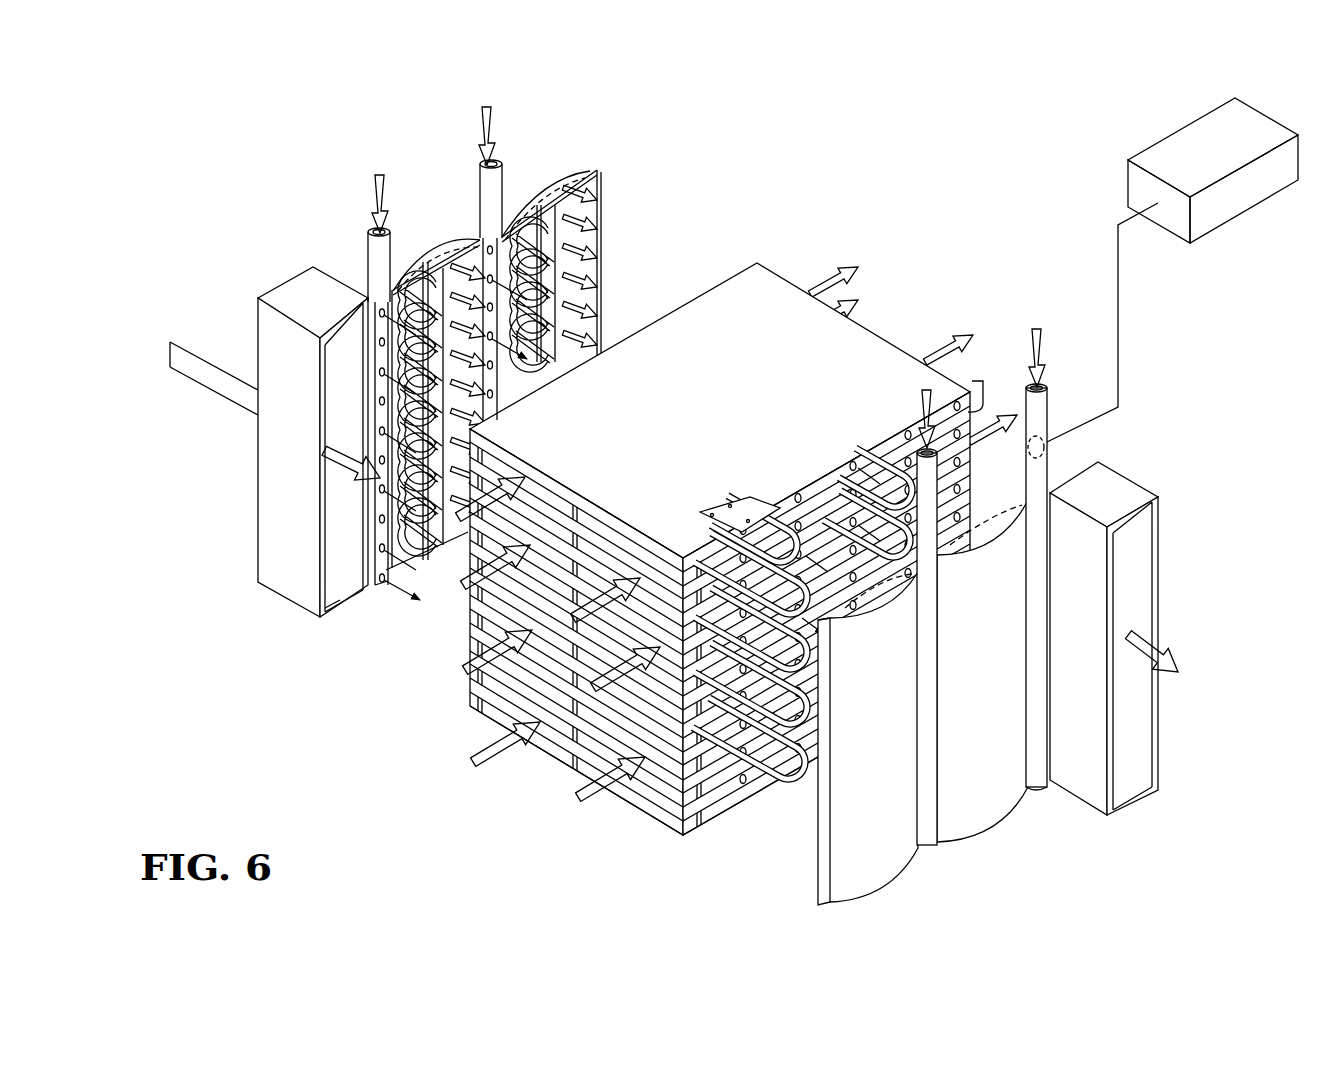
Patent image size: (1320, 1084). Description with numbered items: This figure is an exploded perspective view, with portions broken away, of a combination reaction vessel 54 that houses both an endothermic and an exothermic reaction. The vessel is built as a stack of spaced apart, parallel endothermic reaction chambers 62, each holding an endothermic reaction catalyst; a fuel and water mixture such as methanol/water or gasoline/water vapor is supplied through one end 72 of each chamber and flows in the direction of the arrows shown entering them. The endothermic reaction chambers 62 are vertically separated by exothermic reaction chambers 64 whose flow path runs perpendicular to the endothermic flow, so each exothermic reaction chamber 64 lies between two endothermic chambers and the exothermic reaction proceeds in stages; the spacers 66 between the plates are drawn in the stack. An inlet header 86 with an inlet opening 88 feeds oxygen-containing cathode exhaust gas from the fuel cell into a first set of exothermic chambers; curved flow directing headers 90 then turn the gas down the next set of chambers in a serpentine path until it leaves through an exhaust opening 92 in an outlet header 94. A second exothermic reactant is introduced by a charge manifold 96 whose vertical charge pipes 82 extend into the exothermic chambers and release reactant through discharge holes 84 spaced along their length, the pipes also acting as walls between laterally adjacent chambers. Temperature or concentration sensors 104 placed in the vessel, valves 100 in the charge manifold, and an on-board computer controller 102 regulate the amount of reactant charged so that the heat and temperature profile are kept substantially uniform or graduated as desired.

The combination reaction vessel 54 is at (405, 690).
The endothermic reaction chambers 62 is at (550, 737).
The exothermic reaction chamber 64 is at (713, 757).
The spacer 66 is at (708, 803).
The end of the endothermic reaction chamber 72 is at (497, 673).
The charge pipe 82 is at (723, 517).
The discharge holes 84 is at (698, 528).
The inlet header 86 is at (303, 294).
The inlet opening 88 is at (331, 590).
The flow directing header 90 is at (435, 250).
The exhaust opening 92 is at (1147, 590).
The outlet header 94 is at (1158, 530).
The charge manifold 96 is at (368, 267).
The valves 100 is at (1041, 452).
The on-board computer controllers 102 is at (1218, 127).
The temperature or concentration sensors 104 is at (953, 403).